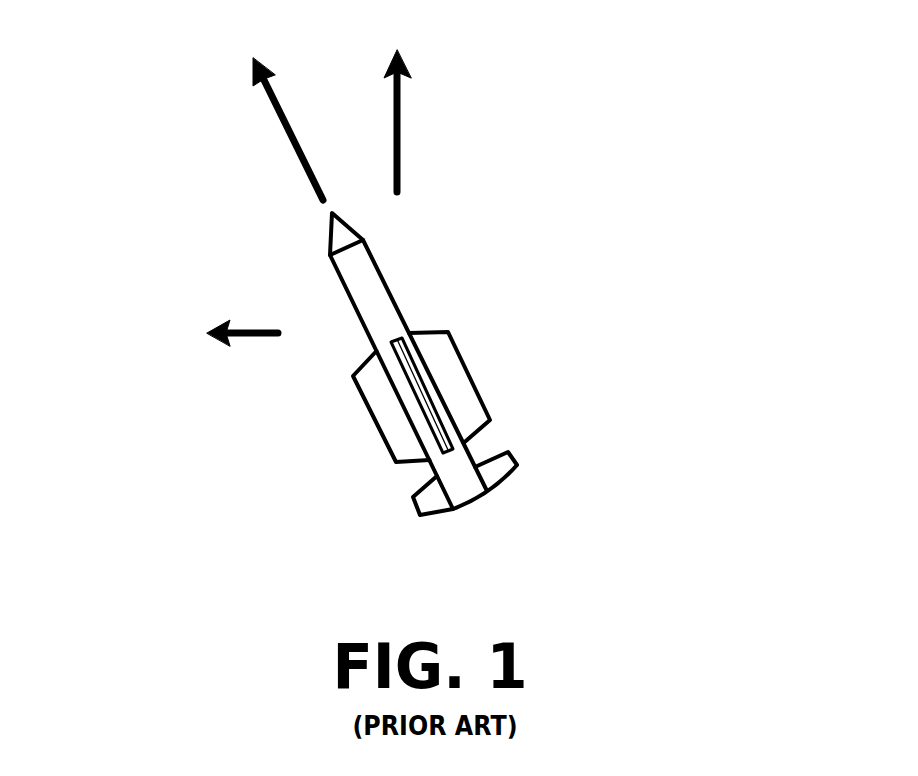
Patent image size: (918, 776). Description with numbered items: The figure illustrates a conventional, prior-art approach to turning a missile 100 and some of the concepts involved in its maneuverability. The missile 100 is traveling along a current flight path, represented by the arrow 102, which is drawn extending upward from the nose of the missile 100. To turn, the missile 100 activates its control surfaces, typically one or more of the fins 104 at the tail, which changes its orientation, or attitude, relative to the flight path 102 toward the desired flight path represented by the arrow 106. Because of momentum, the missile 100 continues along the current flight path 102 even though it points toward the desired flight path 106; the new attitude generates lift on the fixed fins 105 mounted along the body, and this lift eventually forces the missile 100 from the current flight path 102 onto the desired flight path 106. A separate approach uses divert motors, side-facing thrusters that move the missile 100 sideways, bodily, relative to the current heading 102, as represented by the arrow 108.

The missile 100 is at (313, 352).
The flight path 102 is at (403, 100).
The fins 104 is at (513, 452).
The fixed fins 105 is at (397, 340).
The desired flight path 106 is at (291, 122).
The sideways movement arrow 108 is at (245, 327).